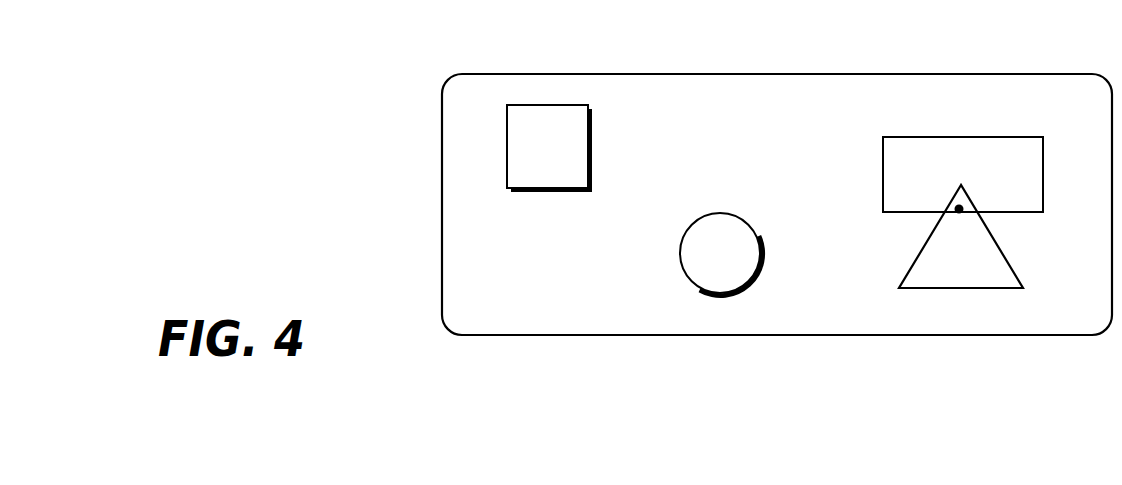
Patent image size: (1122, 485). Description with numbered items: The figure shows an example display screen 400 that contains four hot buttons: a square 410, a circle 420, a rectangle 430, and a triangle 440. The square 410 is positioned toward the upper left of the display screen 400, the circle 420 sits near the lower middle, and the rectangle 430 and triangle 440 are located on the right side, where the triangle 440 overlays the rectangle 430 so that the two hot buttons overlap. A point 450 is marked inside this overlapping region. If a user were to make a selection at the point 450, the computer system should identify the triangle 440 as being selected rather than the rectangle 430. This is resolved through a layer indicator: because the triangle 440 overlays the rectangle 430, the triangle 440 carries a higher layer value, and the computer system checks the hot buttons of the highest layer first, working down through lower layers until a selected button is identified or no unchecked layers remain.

The display screen 400 is at (565, 74).
The square 410 is at (558, 156).
The circle 420 is at (733, 263).
The rectangle 430 is at (919, 161).
The triangle 440 is at (975, 282).
The point 450 is at (955, 210).